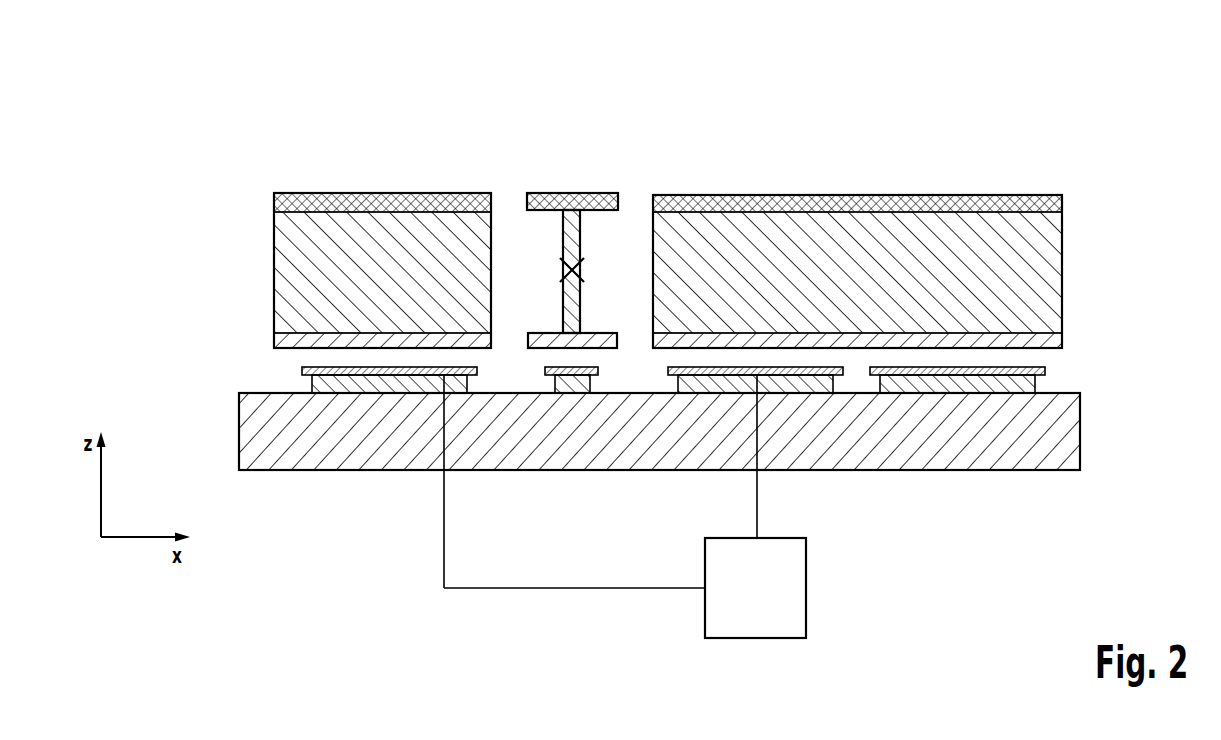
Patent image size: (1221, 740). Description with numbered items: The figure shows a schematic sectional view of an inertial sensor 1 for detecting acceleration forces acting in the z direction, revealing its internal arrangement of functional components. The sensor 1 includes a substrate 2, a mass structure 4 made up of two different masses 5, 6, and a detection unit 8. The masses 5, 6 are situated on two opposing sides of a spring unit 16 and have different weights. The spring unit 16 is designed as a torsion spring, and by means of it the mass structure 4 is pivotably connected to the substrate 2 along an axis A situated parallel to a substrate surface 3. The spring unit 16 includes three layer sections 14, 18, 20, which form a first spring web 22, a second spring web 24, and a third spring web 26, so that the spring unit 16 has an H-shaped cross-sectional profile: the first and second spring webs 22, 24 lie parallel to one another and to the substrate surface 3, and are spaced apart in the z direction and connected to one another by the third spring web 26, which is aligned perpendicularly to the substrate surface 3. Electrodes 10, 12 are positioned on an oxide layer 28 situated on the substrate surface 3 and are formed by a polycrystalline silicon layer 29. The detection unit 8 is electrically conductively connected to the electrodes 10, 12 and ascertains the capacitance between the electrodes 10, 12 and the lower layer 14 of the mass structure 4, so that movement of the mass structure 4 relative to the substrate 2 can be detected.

The inertial sensor 1 is at (196, 74).
The substrate 2 is at (1055, 425).
The substrate surface 3 is at (230, 378).
The mass structure 4 is at (703, 222).
The first mass 5 is at (332, 163).
The second mass 6 is at (892, 222).
The detection unit 8 is at (763, 610).
The electrode 10 is at (380, 385).
The electrode 12 is at (800, 375).
The lower layer 14 is at (1038, 342).
The spring unit 16 is at (584, 275).
The layer section 18 is at (1043, 205).
The layer section 20 is at (1038, 272).
The first spring web 22 is at (565, 340).
The second spring web 24 is at (572, 196).
The third spring web 26 is at (575, 297).
The oxide layer 28 is at (1012, 383).
The polycrystalline silicon layer 29 is at (1045, 372).
The axis A is at (572, 270).